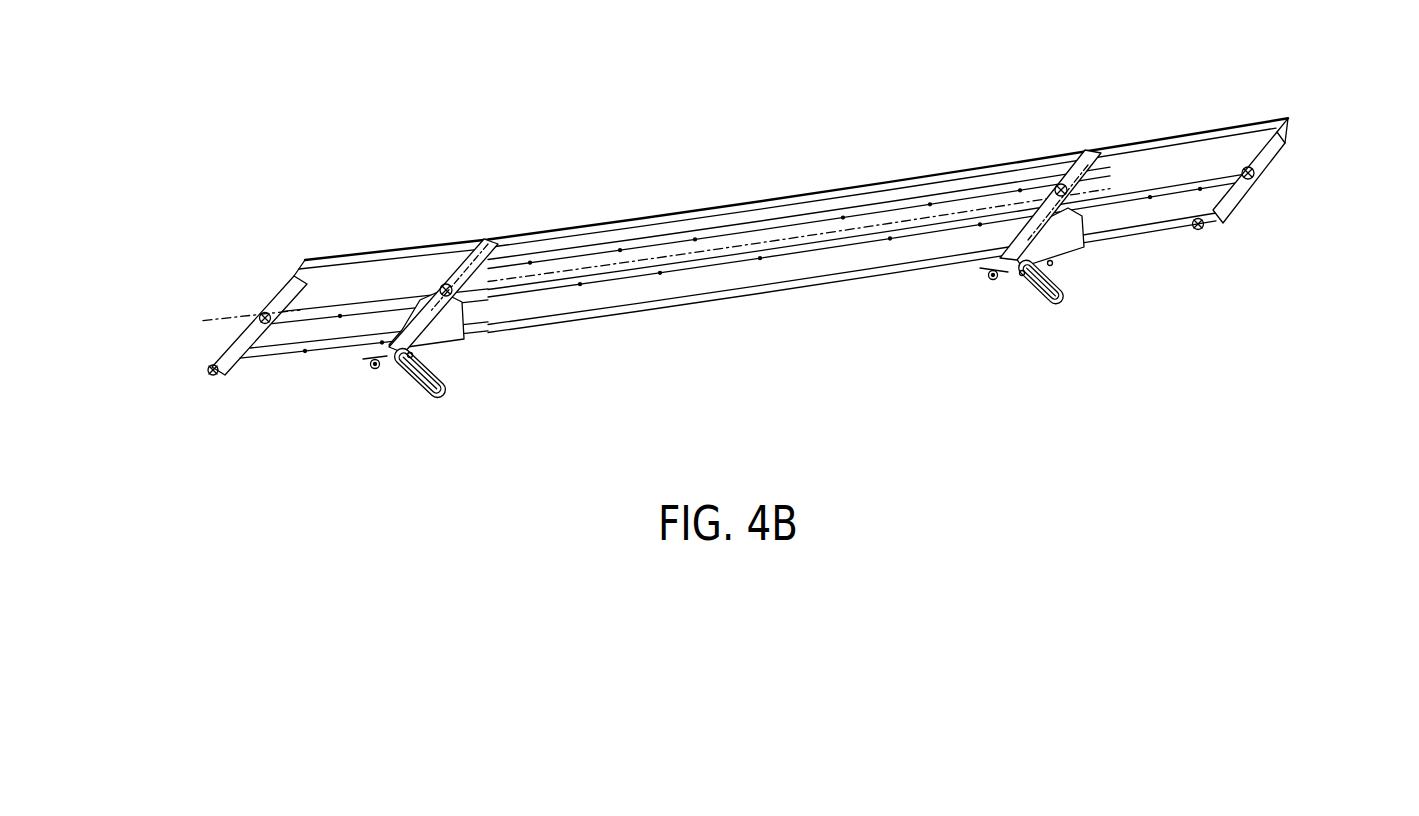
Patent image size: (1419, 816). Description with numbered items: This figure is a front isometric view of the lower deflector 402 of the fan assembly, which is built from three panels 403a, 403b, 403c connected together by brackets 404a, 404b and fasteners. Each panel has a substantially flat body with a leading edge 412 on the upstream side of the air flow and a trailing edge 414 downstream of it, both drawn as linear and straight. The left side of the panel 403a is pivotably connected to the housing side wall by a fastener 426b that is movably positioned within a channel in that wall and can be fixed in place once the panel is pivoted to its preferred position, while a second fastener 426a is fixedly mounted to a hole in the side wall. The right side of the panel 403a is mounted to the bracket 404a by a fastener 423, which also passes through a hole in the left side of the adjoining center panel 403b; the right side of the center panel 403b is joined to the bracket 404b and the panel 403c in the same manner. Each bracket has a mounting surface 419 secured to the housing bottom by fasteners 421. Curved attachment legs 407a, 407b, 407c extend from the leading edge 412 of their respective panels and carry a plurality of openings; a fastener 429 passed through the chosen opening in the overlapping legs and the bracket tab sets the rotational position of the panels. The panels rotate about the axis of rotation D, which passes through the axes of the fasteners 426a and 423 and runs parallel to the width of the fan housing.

The deflector 402 is at (746, 120).
The trailing edge 414 is at (938, 174).
The panel 403a is at (340, 330).
The center panel 403b is at (810, 261).
The panel 403c is at (1177, 221).
The leading edge 412 is at (690, 304).
The fastener 423 is at (441, 287).
The bracket 404a is at (460, 341).
The bracket 404b is at (1073, 246).
The attachment leg 407a is at (417, 390).
The attachment leg 407b is at (445, 398).
The attachment leg 407c is at (1047, 300).
The fastener 429 is at (412, 355).
The fastener 421 is at (381, 370).
The mounting surface 419 is at (1007, 273).
The fastener 426a is at (259, 313).
The fastener 426b is at (210, 365).
The axis of rotation D is at (1255, 164).